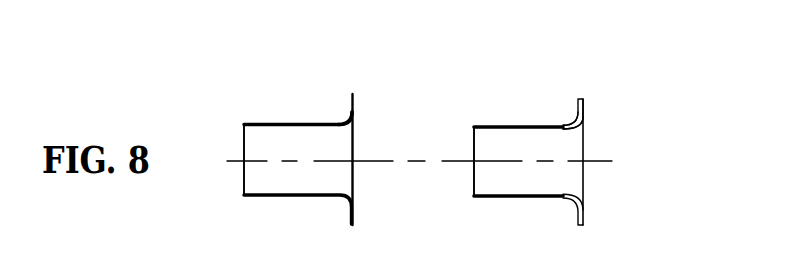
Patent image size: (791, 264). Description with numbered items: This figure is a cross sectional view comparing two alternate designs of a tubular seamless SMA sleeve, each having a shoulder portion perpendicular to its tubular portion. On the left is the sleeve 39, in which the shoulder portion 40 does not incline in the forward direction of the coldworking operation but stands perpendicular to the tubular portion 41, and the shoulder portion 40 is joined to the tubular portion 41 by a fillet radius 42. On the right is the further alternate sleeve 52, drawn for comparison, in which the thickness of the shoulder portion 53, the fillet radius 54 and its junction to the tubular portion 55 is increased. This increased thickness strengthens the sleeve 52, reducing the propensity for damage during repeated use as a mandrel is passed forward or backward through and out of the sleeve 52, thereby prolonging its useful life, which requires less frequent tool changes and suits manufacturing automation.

The tubular seamless SMA sleeve 39 is at (277, 114).
The shoulder portion 40 is at (355, 100).
The tubular portion 41 is at (246, 123).
The fillet radius 42 is at (346, 122).
The tubular seamless SMA sleeve 52 is at (507, 119).
The shoulder portion 53 is at (586, 104).
The fillet radius 54 is at (569, 126).
The tubular portion 55 is at (474, 126).